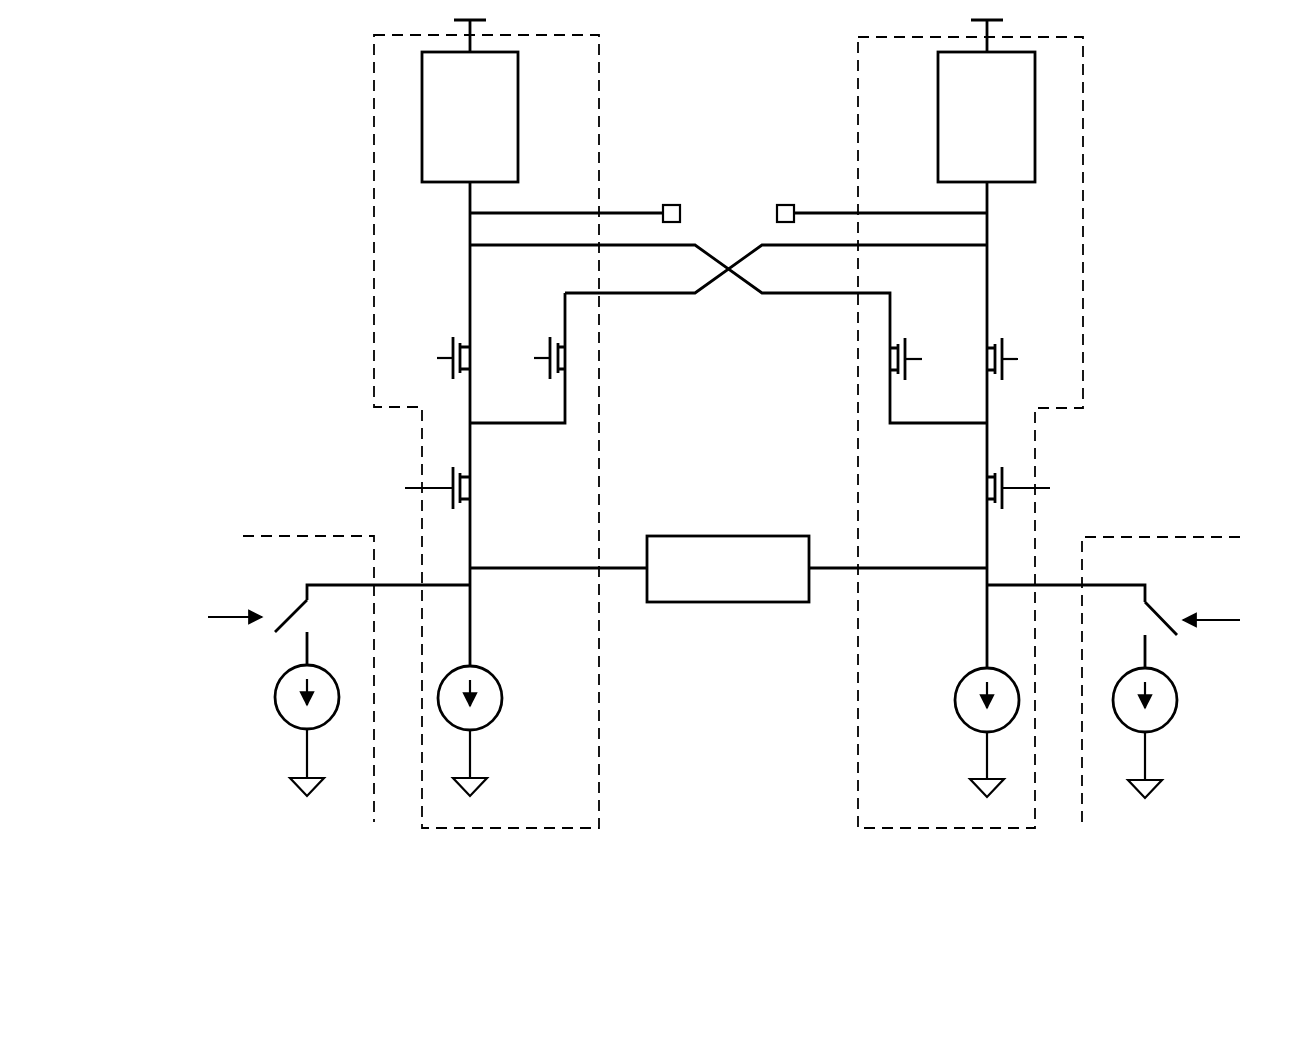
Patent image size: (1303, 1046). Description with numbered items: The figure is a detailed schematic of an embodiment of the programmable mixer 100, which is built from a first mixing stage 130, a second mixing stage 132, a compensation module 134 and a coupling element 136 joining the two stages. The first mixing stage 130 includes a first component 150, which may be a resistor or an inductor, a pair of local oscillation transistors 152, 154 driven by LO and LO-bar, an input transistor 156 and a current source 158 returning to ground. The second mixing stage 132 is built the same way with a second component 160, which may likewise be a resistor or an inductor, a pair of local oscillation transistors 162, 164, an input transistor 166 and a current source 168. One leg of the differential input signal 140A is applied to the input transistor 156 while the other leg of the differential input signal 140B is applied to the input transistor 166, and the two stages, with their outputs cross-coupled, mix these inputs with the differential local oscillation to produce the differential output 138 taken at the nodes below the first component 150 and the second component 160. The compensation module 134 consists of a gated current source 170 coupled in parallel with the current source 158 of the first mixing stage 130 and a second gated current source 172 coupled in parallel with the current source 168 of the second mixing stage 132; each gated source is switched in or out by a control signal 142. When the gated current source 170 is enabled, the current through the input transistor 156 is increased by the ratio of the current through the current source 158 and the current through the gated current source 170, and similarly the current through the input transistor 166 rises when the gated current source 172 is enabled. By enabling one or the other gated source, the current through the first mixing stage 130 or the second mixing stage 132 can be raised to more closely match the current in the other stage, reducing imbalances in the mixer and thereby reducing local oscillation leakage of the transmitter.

The programmable mixer 100 is at (726, 438).
The 1st mixing stage 130 is at (600, 733).
The 2nd mixing stage 132 is at (856, 667).
The compensation module 134 is at (308, 679).
The coupling element 136 is at (728, 569).
The differential output 138 is at (728, 182).
The differential input signal 140A is at (402, 487).
The differential input signal 140B is at (1087, 456).
The control signal 142 is at (207, 609).
The 1st component 150 is at (470, 117).
The local oscillation transistor 152 is at (435, 370).
The local oscillation transistor 154 is at (525, 343).
The input transistor 156 is at (486, 488).
The current source 158 is at (478, 718).
The 2nd component 160 is at (986, 117).
The local oscillation transistor 162 is at (960, 344).
The local oscillation transistor 164 is at (1024, 370).
The input transistor 166 is at (969, 488).
The current source 168 is at (961, 732).
The gated current source 170 is at (314, 690).
The 2nd gated source 172 is at (1138, 691).